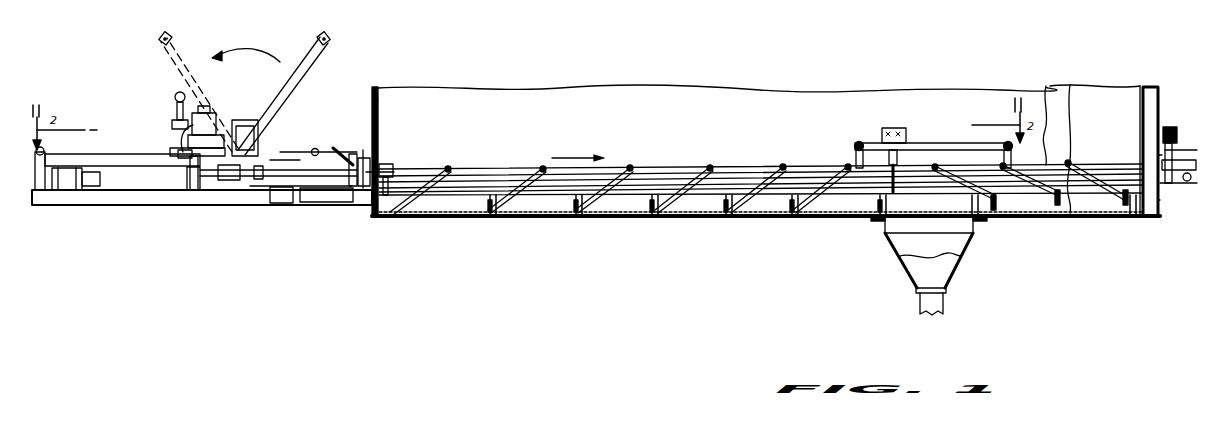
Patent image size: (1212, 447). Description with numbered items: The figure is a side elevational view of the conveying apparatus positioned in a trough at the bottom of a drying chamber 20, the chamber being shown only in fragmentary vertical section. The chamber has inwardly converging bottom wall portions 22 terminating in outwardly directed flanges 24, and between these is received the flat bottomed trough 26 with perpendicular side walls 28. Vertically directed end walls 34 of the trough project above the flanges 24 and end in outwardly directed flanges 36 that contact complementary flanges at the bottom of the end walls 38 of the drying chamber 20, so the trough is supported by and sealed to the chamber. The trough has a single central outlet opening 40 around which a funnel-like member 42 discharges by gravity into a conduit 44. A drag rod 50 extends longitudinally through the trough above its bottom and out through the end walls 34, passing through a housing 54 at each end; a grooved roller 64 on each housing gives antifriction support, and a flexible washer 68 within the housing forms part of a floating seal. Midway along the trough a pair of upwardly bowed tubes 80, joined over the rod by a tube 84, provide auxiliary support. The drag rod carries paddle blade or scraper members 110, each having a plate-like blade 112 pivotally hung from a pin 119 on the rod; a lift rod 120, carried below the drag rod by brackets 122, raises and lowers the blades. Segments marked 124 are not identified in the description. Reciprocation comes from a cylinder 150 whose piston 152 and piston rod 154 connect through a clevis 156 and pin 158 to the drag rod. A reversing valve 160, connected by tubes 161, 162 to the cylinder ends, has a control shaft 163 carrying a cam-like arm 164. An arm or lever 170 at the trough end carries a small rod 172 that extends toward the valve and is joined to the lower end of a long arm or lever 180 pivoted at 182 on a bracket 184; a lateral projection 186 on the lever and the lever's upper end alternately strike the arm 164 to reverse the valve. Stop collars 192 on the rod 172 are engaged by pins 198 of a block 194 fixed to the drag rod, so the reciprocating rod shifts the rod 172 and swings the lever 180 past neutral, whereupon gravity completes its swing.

The drying chamber 20 is at (470, 88).
The bottom wall portions 22 is at (550, 115).
The flanges 24 is at (378, 124).
The trough 26 is at (550, 218).
The side walls 28 is at (620, 218).
The end walls 34 is at (1160, 215).
The flanges 36 is at (384, 164).
The end walls 38 is at (372, 105).
The outlet opening 40 is at (885, 226).
The funnel-like member 42 is at (890, 250).
The conduit 44 is at (918, 306).
The drag rod 50 is at (658, 164).
The housing 54 is at (1166, 138).
The roller 64 is at (1175, 186).
The flexible washer 68 is at (378, 160).
The upwardly bowed tubes 80 is at (852, 160).
The tube 84 is at (926, 145).
The paddle blade or scraper member 110 is at (515, 168).
The paddle blade 112 is at (405, 218).
The pin 119 is at (542, 165).
The lift rod 120 is at (690, 214).
The bracket 122 is at (415, 168).
The trough panel 124 is at (425, 194).
The cylinder 150 is at (132, 192).
The piston 152 is at (64, 195).
The piston rod 154 is at (90, 190).
The clevis 156 is at (225, 185).
The pin 158 is at (262, 185).
The reversing valve 160 is at (172, 126).
The tube 161 is at (78, 156).
The tube 162 is at (185, 157).
The control shaft 163 is at (178, 145).
The cam-like arm 164 is at (226, 120).
The arm or lever 170 is at (338, 160).
The rod 172 is at (318, 148).
The arm or lever 180 is at (284, 97).
The pivot 182 is at (258, 124).
The bracket 184 is at (258, 138).
The lateral projection 186 is at (252, 80).
The stop collars 192 is at (314, 150).
The block 194 is at (285, 188).
The pins 198 is at (268, 158).